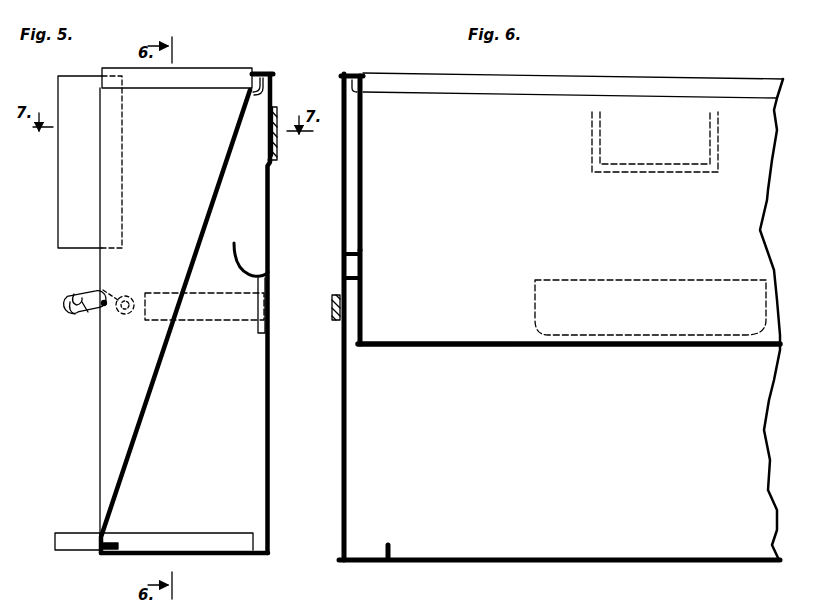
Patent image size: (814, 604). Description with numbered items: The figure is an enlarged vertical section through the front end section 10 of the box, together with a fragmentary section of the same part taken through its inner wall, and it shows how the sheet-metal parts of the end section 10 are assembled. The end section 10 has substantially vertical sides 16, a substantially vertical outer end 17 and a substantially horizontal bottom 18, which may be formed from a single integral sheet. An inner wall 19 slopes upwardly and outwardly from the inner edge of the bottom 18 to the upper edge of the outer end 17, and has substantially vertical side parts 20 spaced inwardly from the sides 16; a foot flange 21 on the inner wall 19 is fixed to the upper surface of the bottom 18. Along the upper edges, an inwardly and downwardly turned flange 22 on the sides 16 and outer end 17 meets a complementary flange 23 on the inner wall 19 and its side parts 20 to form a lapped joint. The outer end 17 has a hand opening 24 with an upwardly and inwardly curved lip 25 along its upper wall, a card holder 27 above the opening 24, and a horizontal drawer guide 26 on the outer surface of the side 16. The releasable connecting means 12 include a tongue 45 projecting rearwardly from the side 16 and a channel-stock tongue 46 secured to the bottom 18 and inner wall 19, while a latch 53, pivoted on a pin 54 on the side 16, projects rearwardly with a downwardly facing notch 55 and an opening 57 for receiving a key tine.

In FIG. 5, the end section 10 is at (235, 66).
In FIG. 6, the end section 10 is at (333, 562).
In FIG. 5, the releasable connecting means 12 is at (70, 287).
In FIG. 5, the side 16 is at (148, 314).
In FIG. 6, the side 16 is at (341, 372).
In FIG. 5, the outer end 17 is at (270, 443).
In FIG. 6, the outer end 17 is at (588, 451).
In FIG. 5, the bottom 18 is at (243, 556).
In FIG. 6, the bottom 18 is at (592, 557).
In FIG. 5, the inner wall 19 is at (160, 368).
In FIG. 6, the inner wall 19 is at (473, 340).
In FIG. 5, the side part 20 is at (167, 227).
In FIG. 6, the side part 20 is at (363, 276).
In FIG. 5, the foot flange 21 is at (116, 540).
In FIG. 5, the inwardly and downwardly turned flange 22 is at (263, 72).
In FIG. 6, the inwardly and downwardly turned flange 22 is at (354, 73).
In FIG. 5, the complementary flange 23 is at (253, 98).
In FIG. 6, the complementary flange 23 is at (348, 86).
In FIG. 5, the opening 24 is at (272, 284).
In FIG. 6, the opening 24 is at (610, 282).
In FIG. 5, the upwardly and inwardly curved lip 25 is at (240, 268).
In FIG. 5, the horizontal drawer guide 26 is at (211, 312).
In FIG. 6, the horizontal drawer guide 26 is at (336, 322).
In FIG. 5, the card holder 27 is at (279, 155).
In FIG. 6, the card holder 27 is at (590, 155).
In FIG. 5, the tongue 45 is at (62, 221).
In FIG. 5, the tongue 46 is at (74, 540).
In FIG. 6, the tongue 46 is at (392, 546).
In FIG. 5, the latch 53 is at (86, 314).
In FIG. 5, the pin 54 is at (127, 296).
In FIG. 5, the downwardly facing notch 55 is at (70, 305).
In FIG. 5, the opening 57 is at (104, 308).